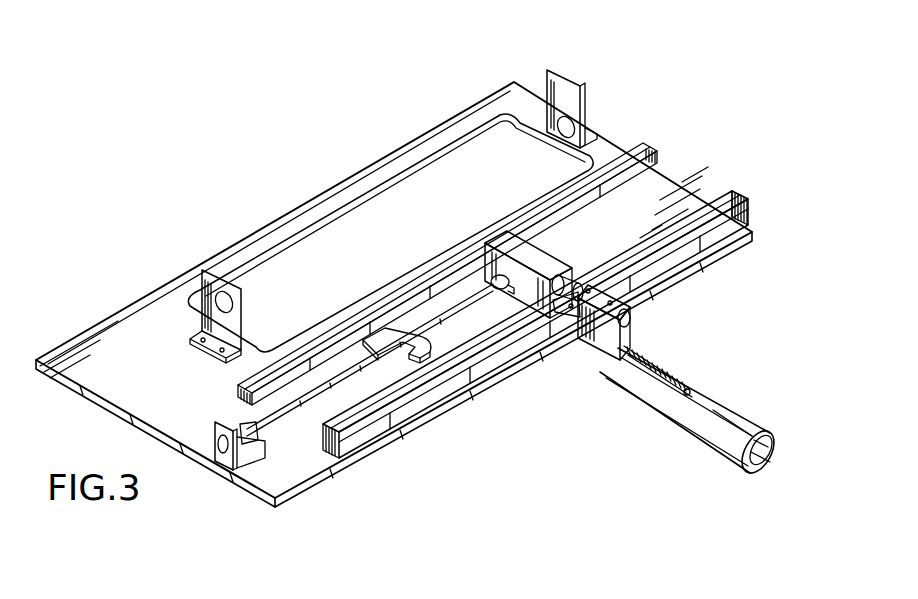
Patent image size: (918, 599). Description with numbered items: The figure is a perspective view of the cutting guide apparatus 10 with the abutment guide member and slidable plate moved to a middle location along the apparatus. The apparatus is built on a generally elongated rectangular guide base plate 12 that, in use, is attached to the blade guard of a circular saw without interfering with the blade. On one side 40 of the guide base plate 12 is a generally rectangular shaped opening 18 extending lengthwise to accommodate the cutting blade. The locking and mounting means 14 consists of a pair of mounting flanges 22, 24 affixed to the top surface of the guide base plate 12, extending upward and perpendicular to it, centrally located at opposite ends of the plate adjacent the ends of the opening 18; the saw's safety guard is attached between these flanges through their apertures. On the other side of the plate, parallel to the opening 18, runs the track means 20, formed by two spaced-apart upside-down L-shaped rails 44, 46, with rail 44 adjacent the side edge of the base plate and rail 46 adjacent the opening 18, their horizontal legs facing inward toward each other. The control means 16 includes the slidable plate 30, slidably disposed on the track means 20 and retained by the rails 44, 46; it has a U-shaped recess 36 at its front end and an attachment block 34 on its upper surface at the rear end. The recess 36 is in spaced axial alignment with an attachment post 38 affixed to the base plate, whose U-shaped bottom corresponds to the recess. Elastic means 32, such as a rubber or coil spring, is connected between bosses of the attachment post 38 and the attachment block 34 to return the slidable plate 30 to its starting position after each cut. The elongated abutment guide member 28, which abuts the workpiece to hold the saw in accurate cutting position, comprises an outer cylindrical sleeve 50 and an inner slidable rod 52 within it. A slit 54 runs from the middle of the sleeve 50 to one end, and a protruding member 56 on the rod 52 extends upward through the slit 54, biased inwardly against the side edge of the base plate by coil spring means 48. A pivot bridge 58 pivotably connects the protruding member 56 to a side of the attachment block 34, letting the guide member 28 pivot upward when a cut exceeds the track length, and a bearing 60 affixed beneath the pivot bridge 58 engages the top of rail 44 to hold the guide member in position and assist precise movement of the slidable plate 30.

The cutting guide apparatus 10 is at (666, 82).
The guide base plate 12 is at (125, 369).
The locking and mounting means 14 is at (556, 60).
The control means 16 is at (304, 508).
The rectangular shaped opening 18 is at (360, 219).
The track means 20 is at (684, 172).
The mounting flange 22 is at (208, 266).
The mounting flange 24 is at (546, 78).
The abutment guide member 28 is at (745, 408).
The slidable plate 30 is at (451, 338).
The elastic means 32 is at (333, 380).
The attachment block 34 is at (568, 256).
The U-shaped recess 36 is at (412, 346).
The attachment post 38 is at (226, 456).
The one side 40 is at (110, 332).
The L-shaped rail 44 is at (727, 190).
The L-shaped rail 46 is at (644, 140).
The coil spring means 48 is at (678, 373).
The outer cylindrical sleeve 50 is at (707, 423).
The inner slidable rod 52 is at (782, 453).
The slit 54 is at (574, 340).
The protruding member 56 is at (610, 340).
The pivot bridge 58 is at (572, 272).
The bearing 60 is at (570, 276).